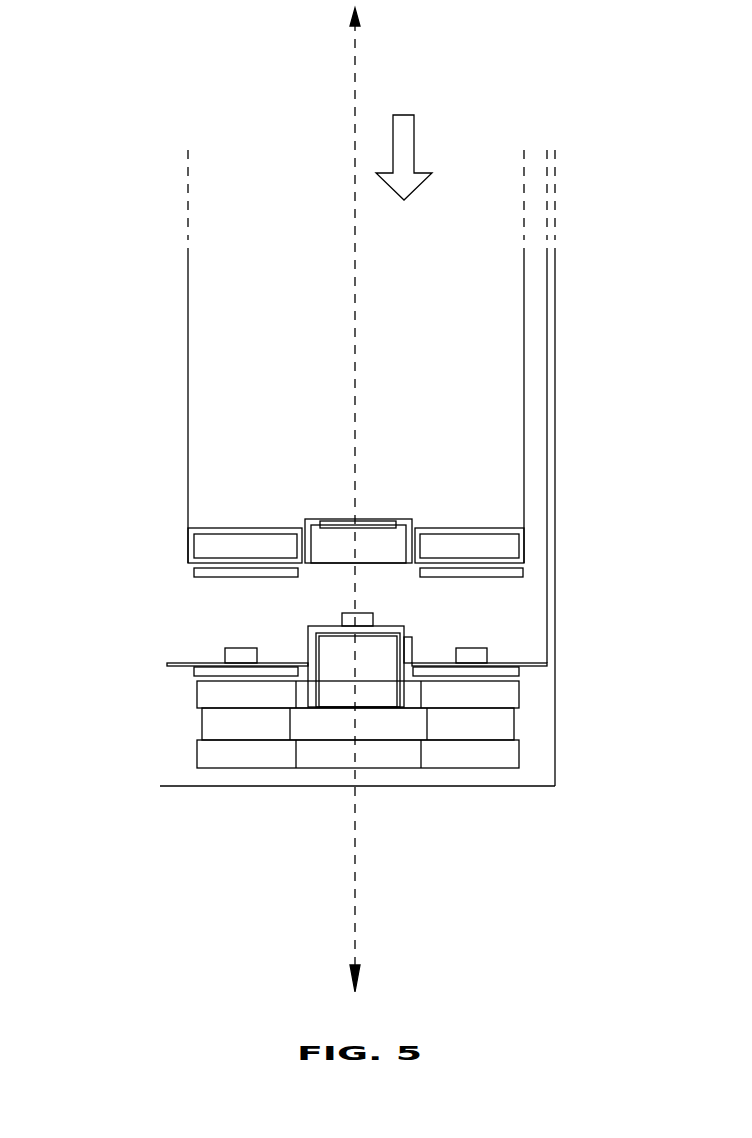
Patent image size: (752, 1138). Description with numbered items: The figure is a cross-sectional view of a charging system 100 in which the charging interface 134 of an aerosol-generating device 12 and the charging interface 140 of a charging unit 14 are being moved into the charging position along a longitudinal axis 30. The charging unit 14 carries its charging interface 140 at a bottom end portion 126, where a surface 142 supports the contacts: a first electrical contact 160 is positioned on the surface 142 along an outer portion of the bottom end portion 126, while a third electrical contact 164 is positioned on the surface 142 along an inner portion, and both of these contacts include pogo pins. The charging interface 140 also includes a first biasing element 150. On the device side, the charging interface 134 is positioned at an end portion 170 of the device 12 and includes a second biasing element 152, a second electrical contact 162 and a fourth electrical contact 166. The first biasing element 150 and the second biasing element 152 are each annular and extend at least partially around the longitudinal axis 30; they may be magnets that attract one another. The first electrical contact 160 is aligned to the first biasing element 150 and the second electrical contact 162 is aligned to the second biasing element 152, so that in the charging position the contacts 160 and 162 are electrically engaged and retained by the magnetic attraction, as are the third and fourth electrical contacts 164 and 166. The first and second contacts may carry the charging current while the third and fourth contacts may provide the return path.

The charging system 100 is at (112, 127).
The aerosol-generating device 12 is at (225, 391).
The charging unit 14 is at (558, 690).
The longitudinal axis 30 is at (357, 907).
The bottom end portion 126 is at (558, 641).
The charging interface 134 is at (268, 588).
The charging interface 140 is at (450, 726).
The surface 142 is at (449, 633).
The first biasing element 150 is at (208, 691).
The second biasing element 152 is at (220, 542).
The first electrical contact 160 is at (476, 657).
The second electrical contact 162 is at (203, 578).
The third electrical contact 164 is at (350, 618).
The fourth electrical contact 166 is at (371, 521).
The end portion 170 is at (540, 540).